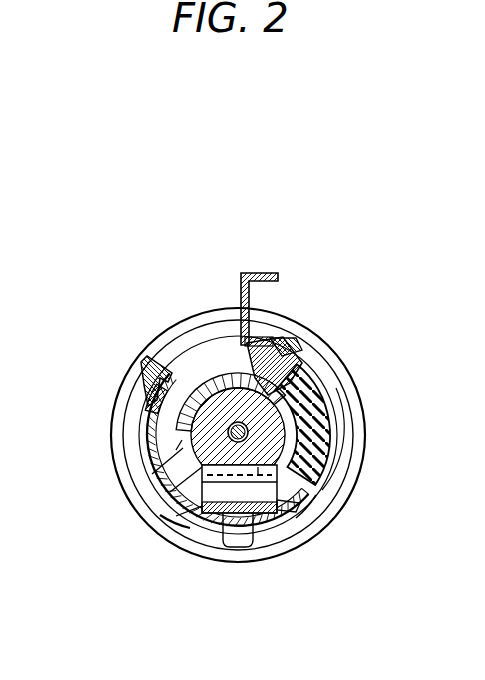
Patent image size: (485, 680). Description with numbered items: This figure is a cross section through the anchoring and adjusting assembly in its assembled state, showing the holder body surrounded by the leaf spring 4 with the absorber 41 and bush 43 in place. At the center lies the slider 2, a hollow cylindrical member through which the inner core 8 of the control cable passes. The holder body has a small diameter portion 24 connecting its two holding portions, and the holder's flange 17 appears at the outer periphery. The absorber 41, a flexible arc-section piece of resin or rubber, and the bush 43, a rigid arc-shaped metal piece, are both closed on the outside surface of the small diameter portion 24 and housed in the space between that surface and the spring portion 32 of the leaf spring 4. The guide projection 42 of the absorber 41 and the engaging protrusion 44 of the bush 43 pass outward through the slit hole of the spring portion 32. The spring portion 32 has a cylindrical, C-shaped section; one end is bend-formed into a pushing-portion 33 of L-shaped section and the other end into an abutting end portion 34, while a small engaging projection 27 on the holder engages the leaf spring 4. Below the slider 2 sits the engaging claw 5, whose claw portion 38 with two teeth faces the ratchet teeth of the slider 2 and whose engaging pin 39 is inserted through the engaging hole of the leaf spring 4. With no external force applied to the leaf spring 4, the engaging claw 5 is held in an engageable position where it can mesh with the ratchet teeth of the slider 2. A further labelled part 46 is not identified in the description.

The slider 2 is at (182, 450).
The leaf spring 4 is at (280, 285).
The engaging claw 5 is at (220, 491).
The inner core 8 is at (226, 444).
The flange 17 is at (116, 410).
The small diameter portion 24 is at (222, 376).
The engaging projection 27 is at (145, 400).
The spring portion 32 is at (180, 517).
The pushing-portion 33 is at (252, 276).
The abutting end portion 34 is at (152, 372).
The claw portion 38 is at (285, 508).
The engaging pin 39 is at (238, 530).
The absorber 41 is at (330, 392).
The guide projection 42 is at (330, 428).
The bush 43 is at (275, 350).
The engaging protrusion 44 is at (295, 341).
The ring segment 46 is at (314, 484).